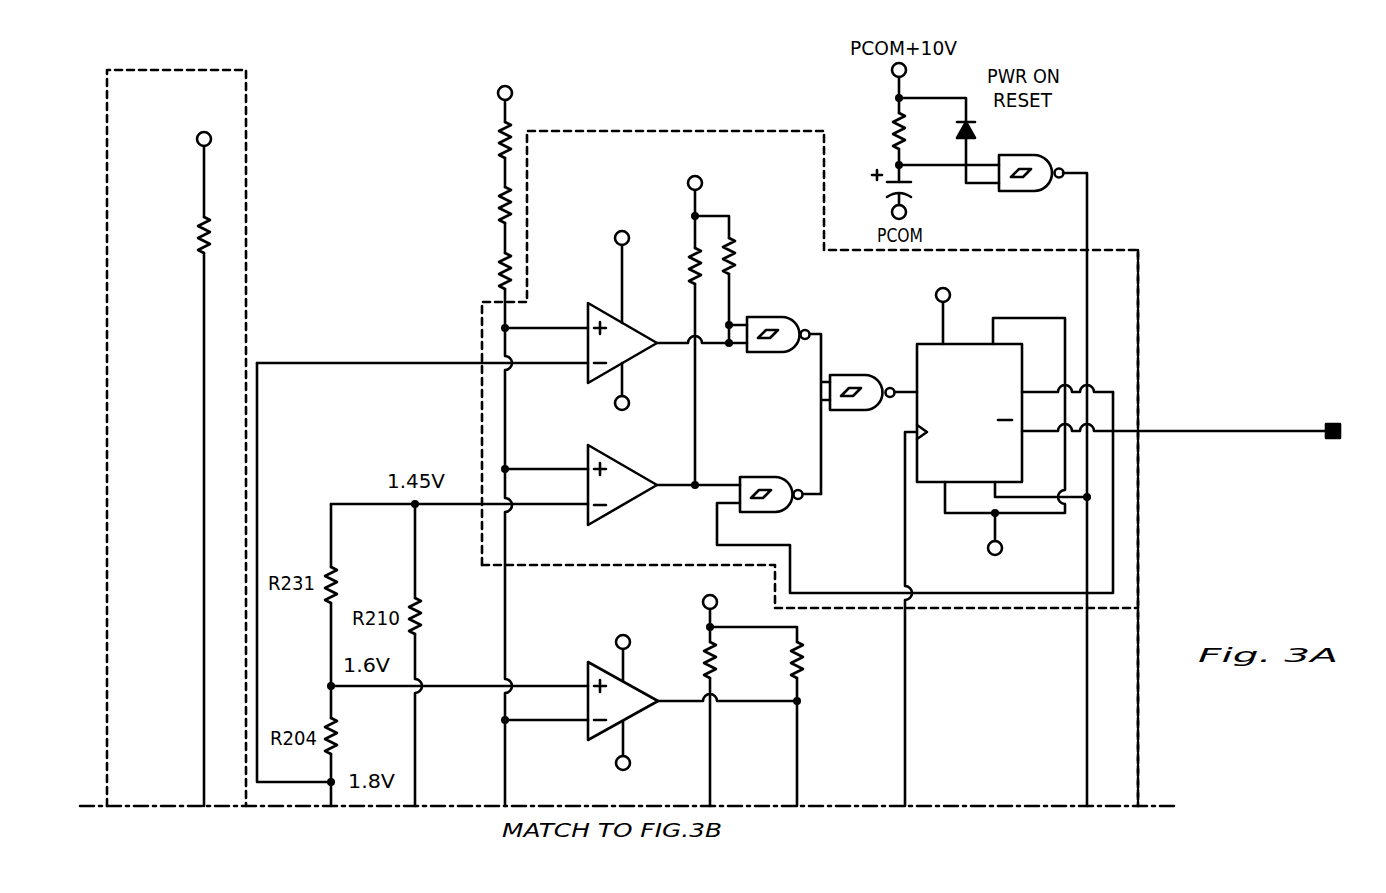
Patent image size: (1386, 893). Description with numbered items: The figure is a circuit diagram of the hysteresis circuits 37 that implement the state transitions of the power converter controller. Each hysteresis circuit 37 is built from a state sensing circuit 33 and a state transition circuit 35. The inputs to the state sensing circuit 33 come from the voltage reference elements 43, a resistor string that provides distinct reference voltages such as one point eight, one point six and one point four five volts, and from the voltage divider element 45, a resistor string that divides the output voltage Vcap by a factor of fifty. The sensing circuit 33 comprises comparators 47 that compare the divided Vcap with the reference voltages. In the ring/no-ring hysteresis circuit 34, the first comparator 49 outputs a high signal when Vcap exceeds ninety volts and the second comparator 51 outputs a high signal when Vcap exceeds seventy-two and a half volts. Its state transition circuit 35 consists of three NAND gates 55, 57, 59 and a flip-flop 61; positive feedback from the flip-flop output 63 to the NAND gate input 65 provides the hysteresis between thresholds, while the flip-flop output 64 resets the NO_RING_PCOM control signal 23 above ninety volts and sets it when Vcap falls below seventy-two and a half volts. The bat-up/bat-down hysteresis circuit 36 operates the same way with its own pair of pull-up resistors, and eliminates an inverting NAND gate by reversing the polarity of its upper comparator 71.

The voltage reference elements 43 is at (172, 540).
The voltage divider element 45 is at (410, 181).
The comparator 47 is at (562, 297).
The first comparator 49 is at (640, 330).
The second comparator 51 is at (640, 472).
The state sensing circuit 33 is at (670, 523).
The ring/no-ring hysteresis circuit 34 is at (786, 211).
The state transition circuit 35 is at (948, 528).
The bat-up/bat-down hysteresis circuit 36 is at (1003, 726).
The hysteresis circuit 37 is at (1170, 516).
The NAND gate 55 is at (765, 355).
The NAND gate 57 is at (766, 477).
The NAND gate 59 is at (866, 410).
The flip-flop 61 is at (968, 344).
The flip-flop output 63 is at (1041, 388).
The flip-flop output 64 is at (1041, 436).
The NAND gate input 65 is at (717, 534).
The upper comparator 71 is at (590, 732).
The control signal 23 is at (1333, 440).